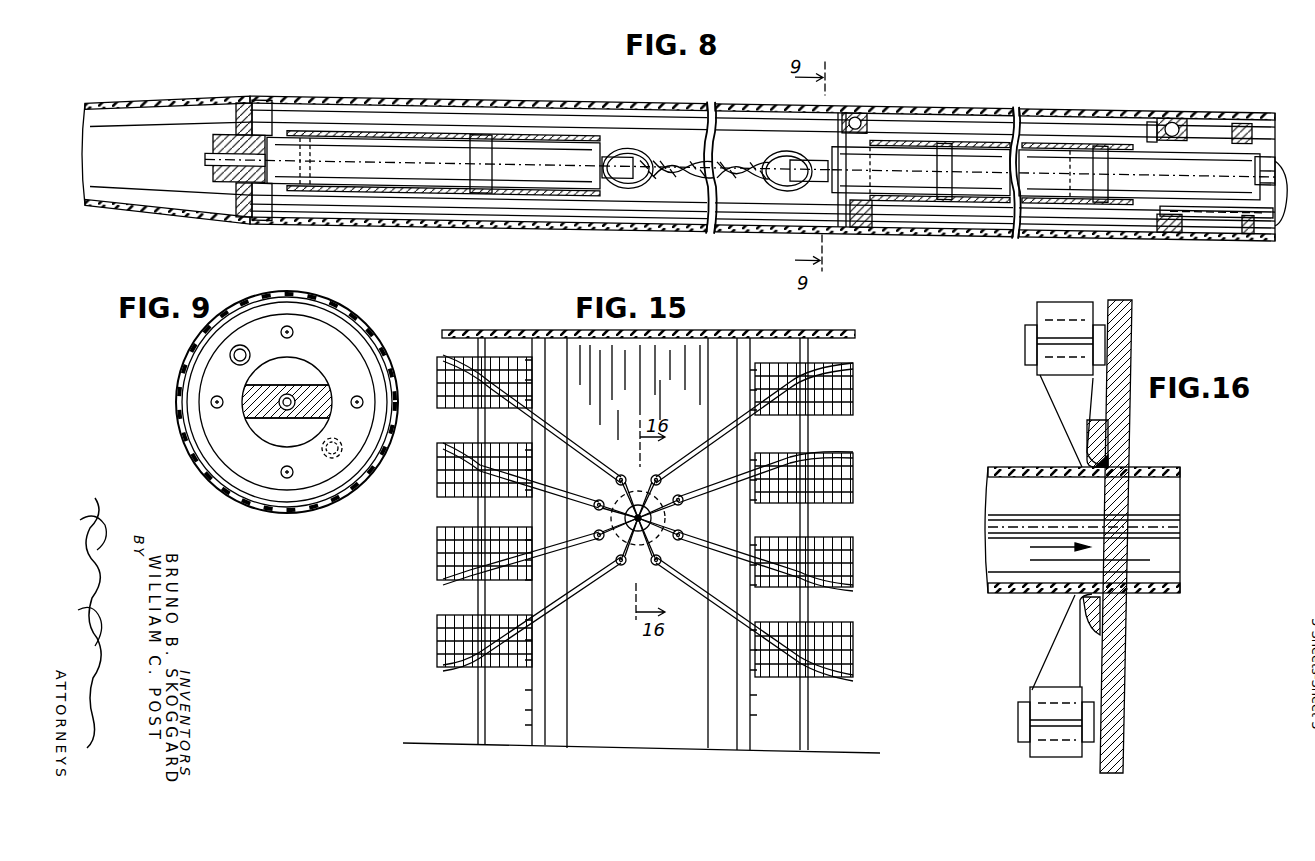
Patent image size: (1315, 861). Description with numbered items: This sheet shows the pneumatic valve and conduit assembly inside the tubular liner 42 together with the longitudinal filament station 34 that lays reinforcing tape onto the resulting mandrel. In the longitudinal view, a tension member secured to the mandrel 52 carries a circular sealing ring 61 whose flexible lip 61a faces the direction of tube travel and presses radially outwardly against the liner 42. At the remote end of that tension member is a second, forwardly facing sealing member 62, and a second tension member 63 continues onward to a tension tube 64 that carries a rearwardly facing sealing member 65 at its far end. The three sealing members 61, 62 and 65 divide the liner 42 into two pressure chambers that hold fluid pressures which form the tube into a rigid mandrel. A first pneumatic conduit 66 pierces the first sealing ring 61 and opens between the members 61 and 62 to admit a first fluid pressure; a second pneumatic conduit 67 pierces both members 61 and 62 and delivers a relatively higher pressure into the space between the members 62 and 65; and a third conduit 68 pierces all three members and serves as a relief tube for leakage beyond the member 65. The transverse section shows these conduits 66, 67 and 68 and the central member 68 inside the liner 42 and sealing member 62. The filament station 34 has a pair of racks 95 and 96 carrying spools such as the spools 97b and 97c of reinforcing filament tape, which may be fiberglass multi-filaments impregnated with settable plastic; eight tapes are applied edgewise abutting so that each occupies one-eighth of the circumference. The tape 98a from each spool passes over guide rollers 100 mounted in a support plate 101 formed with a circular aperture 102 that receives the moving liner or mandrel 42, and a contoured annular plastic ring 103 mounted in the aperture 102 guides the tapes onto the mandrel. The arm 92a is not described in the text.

In FIG. 8, the tubular liner 42 is at (380, 93).
In FIG. 9, the tubular liner 42 is at (282, 297).
In FIG. 15, the tubular liner 42 is at (652, 530).
In FIG. 16, the tubular liner 42 is at (1013, 467).
In FIG. 8, the mandrel 52 is at (1240, 222).
In FIG. 8, the sealing ring 61 is at (1175, 100).
In FIG. 8, the flexible lip 61a is at (1155, 103).
In FIG. 8, the second sealing member 62 is at (856, 220).
In FIG. 9, the second sealing member 62 is at (220, 468).
In FIG. 8, the second tension member 63 is at (680, 141).
In FIG. 16, the second tension member 63 is at (1166, 534).
In FIG. 8, the tension tube 64 is at (522, 134).
In FIG. 8, the sealing member 65 is at (243, 100).
In FIG. 8, the first pneumatic conduit 66 is at (1200, 197).
In FIG. 9, the first pneumatic conduit 66 is at (334, 460).
In FIG. 8, the second pneumatic conduit 67 is at (853, 99).
In FIG. 9, the second pneumatic conduit 67 is at (230, 355).
In FIG. 8, the third conduit 68 is at (207, 152).
In FIG. 9, the third conduit 68 is at (280, 403).
In FIG. 16, the third conduit 68 is at (1150, 522).
In FIG. 15, the longitudinal filament station 34 is at (531, 319).
In FIG. 15, the spring arm 92a is at (850, 366).
In FIG. 15, the rack 95 is at (700, 334).
In FIG. 15, the rack 96 is at (740, 715).
In FIG. 15, the spool 97b is at (850, 455).
In FIG. 15, the spool 97c is at (840, 542).
In FIG. 15, the tape 98a is at (742, 436).
In FIG. 16, the tape 98a is at (1062, 400).
In FIG. 15, the guide roller 100 is at (676, 500).
In FIG. 16, the guide roller 100 is at (1035, 321).
In FIG. 15, the support plate 101 is at (575, 710).
In FIG. 16, the support plate 101 is at (1135, 316).
In FIG. 15, the circular aperture 102 is at (660, 500).
In FIG. 16, the circular aperture 102 is at (1122, 466).
In FIG. 15, the annular plastic ring 103 is at (622, 537).
In FIG. 16, the annular plastic ring 103 is at (1100, 440).